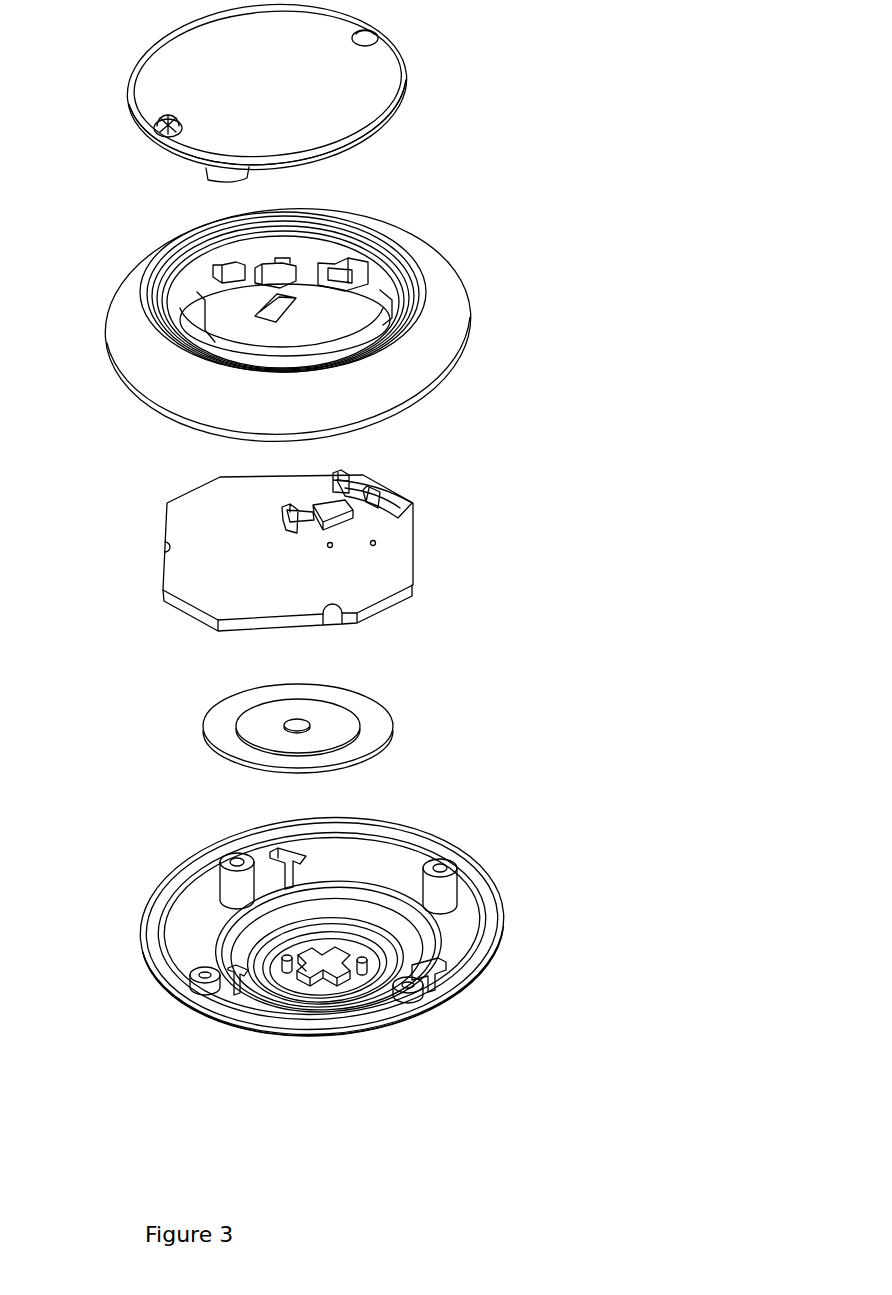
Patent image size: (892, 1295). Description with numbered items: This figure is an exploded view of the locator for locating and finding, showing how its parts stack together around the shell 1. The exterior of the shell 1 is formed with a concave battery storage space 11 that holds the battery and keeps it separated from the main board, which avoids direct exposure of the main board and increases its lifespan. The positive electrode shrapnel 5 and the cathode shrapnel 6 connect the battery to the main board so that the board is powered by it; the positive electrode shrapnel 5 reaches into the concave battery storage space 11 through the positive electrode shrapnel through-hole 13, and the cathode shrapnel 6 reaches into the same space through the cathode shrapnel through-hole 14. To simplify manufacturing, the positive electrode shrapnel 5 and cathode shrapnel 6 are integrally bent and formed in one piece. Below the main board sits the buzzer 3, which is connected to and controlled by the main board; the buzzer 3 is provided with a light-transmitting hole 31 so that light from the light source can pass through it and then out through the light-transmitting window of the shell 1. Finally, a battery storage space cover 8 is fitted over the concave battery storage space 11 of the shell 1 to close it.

The shell 1 is at (477, 888).
The buzzer 3 is at (248, 735).
The light-transmitting hole 31 is at (308, 725).
The positive electrode shrapnel 5 is at (392, 503).
The cathode shrapnel 6 is at (328, 518).
The battery storage space cover 8 is at (352, 90).
The concave battery storage space 11 is at (233, 305).
The positive electrode shrapnel through-hole 13 is at (340, 278).
The cathode shrapnel through-hole 14 is at (272, 318).